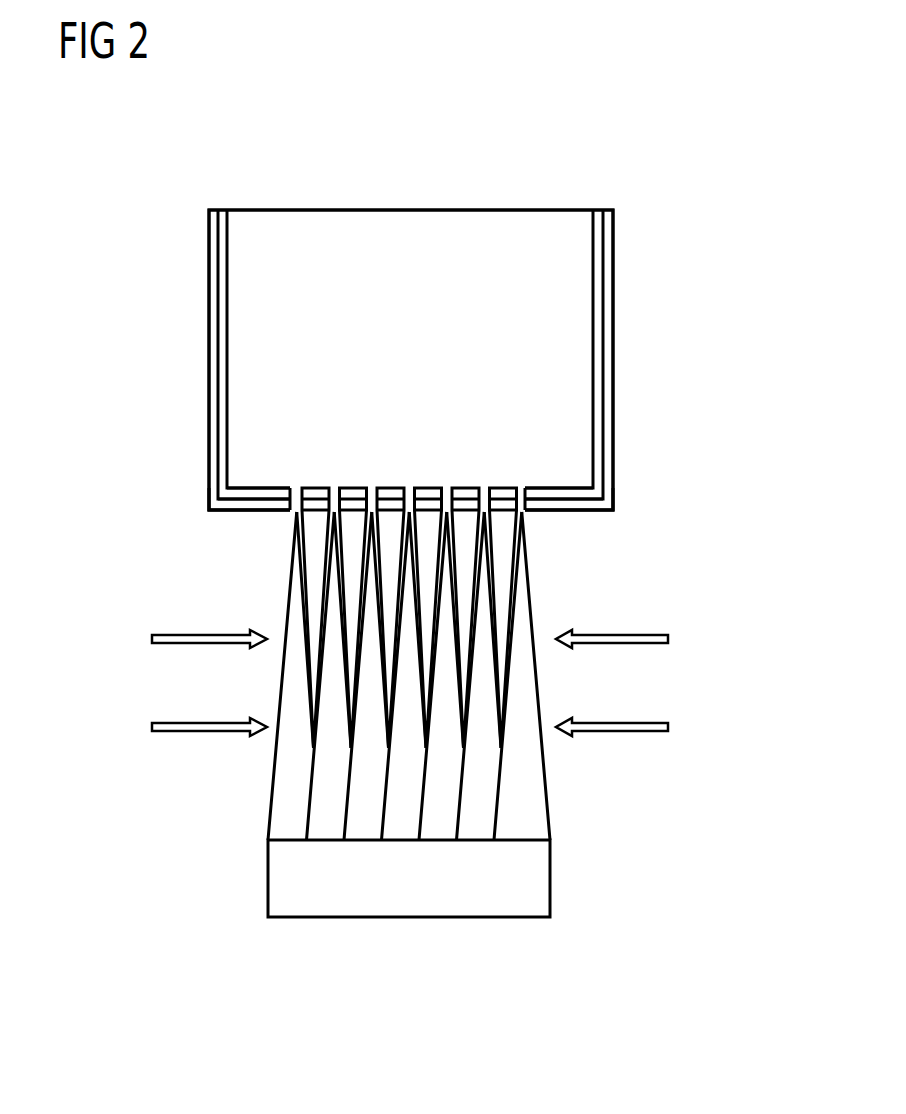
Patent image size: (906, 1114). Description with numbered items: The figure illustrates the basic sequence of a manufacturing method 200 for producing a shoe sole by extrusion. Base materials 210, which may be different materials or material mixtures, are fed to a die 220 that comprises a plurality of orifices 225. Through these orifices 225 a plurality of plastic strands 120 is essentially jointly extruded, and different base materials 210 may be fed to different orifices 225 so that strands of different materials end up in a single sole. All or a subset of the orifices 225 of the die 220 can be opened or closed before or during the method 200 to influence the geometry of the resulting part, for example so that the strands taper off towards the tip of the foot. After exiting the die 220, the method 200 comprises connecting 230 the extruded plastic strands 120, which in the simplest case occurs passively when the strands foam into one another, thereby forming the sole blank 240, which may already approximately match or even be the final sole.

The plastic strands 120 is at (370, 623).
The manufacturing method 200 is at (287, 175).
The base materials 210 is at (411, 240).
The die 220 is at (259, 526).
The orifices 225 is at (517, 490).
The connecting 230 is at (152, 639).
The sole blank 240 is at (550, 925).